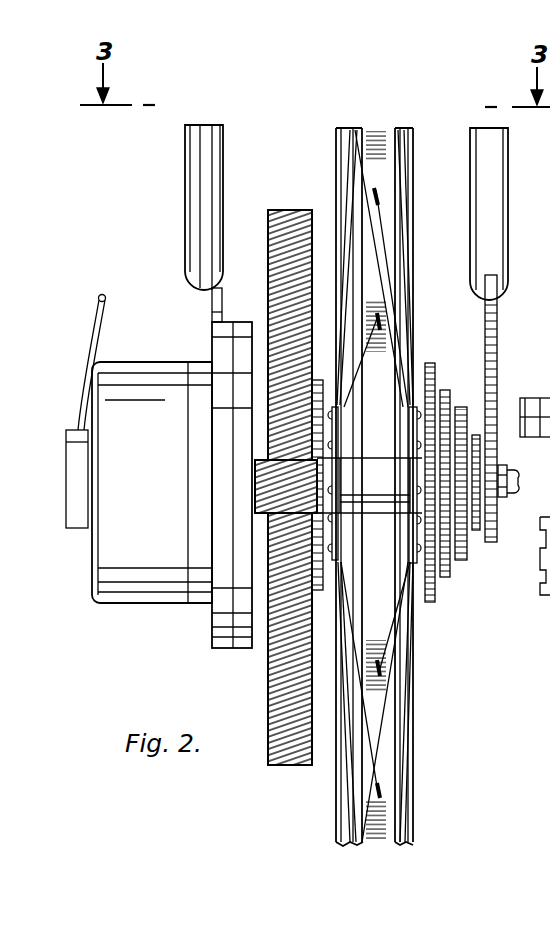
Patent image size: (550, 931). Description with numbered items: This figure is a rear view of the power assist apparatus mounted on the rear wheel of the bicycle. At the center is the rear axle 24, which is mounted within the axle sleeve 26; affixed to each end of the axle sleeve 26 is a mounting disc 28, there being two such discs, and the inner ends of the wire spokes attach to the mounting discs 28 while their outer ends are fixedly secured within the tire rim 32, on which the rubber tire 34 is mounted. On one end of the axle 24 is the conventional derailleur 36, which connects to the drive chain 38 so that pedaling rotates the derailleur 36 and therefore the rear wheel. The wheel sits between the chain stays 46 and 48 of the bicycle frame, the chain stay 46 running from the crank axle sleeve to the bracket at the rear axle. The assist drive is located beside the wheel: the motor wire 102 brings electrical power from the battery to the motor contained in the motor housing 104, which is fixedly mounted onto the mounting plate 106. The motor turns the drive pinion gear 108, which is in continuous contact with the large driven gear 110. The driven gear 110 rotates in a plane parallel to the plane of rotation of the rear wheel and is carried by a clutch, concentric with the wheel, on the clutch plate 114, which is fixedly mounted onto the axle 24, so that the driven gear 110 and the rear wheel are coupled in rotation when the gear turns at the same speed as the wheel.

The axle 24 is at (520, 478).
The axle sleeve 26 is at (452, 572).
The mounting disc 28 is at (345, 545).
The tire rim 32 is at (383, 806).
The rubber tire 34 is at (414, 825).
The derailleur 36 is at (426, 348).
The drive chain 38 is at (460, 407).
The chain stay 46 is at (185, 184).
The chain stay 48 is at (508, 193).
The motor wire 102 is at (98, 298).
The motor housing 104 is at (145, 595).
The mounting plate 106 is at (240, 650).
The drive pinion gear 108 is at (260, 460).
The driven gear 110 is at (290, 767).
The clutch plate 114 is at (325, 592).